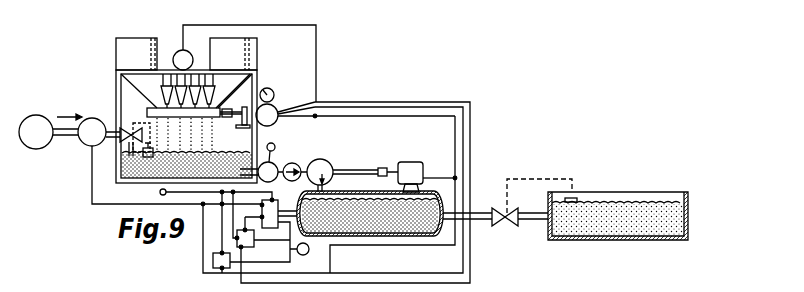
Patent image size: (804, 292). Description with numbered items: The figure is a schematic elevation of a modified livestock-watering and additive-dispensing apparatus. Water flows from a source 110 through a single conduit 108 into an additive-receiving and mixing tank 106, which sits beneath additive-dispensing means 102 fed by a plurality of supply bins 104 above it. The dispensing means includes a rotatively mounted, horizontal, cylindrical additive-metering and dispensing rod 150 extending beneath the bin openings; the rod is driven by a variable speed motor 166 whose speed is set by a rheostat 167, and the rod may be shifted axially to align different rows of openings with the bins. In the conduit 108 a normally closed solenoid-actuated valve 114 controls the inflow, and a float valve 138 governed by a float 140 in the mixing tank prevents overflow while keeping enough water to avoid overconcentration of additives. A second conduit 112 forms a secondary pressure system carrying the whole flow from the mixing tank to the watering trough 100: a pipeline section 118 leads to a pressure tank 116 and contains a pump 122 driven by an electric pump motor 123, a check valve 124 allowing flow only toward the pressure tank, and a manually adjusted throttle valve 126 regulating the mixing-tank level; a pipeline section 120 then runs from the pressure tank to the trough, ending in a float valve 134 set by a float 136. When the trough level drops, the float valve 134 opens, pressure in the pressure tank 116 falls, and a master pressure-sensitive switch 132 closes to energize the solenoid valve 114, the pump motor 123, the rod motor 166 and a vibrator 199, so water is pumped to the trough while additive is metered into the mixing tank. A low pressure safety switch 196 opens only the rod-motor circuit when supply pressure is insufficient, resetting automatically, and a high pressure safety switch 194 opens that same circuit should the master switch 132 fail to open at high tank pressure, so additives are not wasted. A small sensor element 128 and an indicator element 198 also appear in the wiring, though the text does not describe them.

The watering trough 100 is at (696, 219).
The additive-dispensing means 102 is at (237, 92).
The supply bins 104 is at (261, 36).
The additive-receiving and mixing tank 106 is at (120, 167).
The supply conduit 108 is at (63, 137).
The water source 110 is at (36, 115).
The second conduit 112 is at (477, 206).
The solenoid-actuated valve 114 is at (92, 118).
The pressure tank 116 is at (444, 230).
The pipeline section 118 is at (327, 160).
The pipeline section 120 is at (485, 224).
The pump 122 is at (336, 167).
The pump motor 123 is at (412, 162).
The check valve 124 is at (300, 163).
The throttle valve 126 is at (277, 165).
The sensor 128 is at (274, 144).
The master pressure-sensitive switch 132 is at (272, 200).
The float valve 134 is at (510, 208).
The float 136 is at (577, 199).
The float valve 138 is at (122, 128).
The float 140 is at (148, 165).
The additive-metering and dispensing rod 150 is at (197, 118).
The variable speed motor 166 is at (284, 107).
The rheostat 167 is at (270, 88).
The high pressure safety switch 194 is at (237, 240).
The low pressure safety switch 196 is at (213, 262).
The indicator 198 is at (309, 249).
The vibrator 199 is at (183, 50).